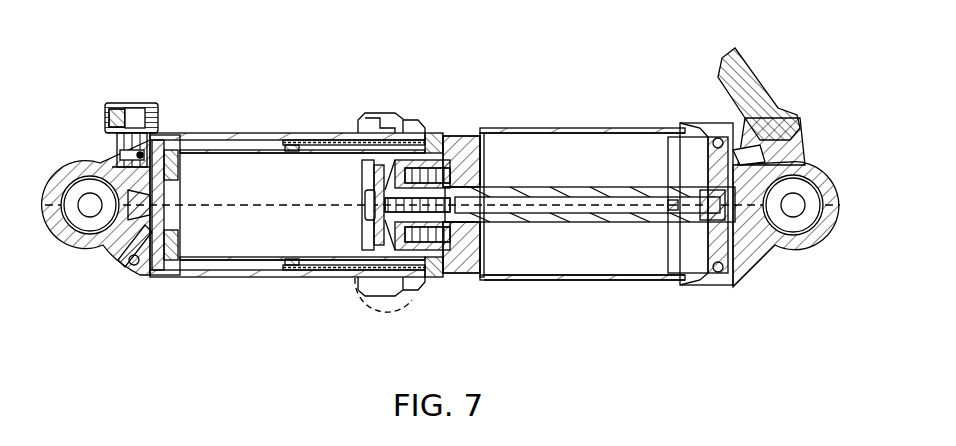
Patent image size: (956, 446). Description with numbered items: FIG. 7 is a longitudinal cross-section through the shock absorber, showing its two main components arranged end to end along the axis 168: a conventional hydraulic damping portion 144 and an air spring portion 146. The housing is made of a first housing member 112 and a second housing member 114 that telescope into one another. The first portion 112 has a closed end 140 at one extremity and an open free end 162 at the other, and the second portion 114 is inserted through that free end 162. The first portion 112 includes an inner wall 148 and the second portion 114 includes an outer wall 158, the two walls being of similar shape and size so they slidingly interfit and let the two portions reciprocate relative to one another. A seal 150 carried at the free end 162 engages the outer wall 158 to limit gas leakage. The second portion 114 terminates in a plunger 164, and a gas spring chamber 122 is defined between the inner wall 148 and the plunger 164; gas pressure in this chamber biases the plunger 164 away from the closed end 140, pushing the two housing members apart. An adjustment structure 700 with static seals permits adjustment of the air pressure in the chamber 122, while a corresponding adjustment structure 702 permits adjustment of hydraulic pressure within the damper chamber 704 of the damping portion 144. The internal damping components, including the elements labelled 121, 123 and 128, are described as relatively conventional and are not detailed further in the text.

The air pressure adjustment structure 700 is at (768, 63).
The hydraulic pressure adjustment structure 702 is at (104, 86).
The damper chamber 704 is at (250, 237).
The first housing member 112 is at (512, 128).
The second housing member 114 is at (318, 136).
The piston 121 is at (458, 129).
The gas spring chamber 122 is at (571, 132).
The piston rod 123 is at (577, 222).
The outer reservoir tube 128 is at (219, 140).
The closed end 140 is at (712, 300).
The hydraulic damping portion 144 is at (226, 281).
The air spring portion 146 is at (618, 300).
The inner wall 148 is at (632, 130).
The seal 150 is at (384, 115).
The outer wall 158 is at (190, 128).
The free end 162 is at (428, 74).
The plunger 164 is at (490, 265).
The axis 168 is at (263, 200).